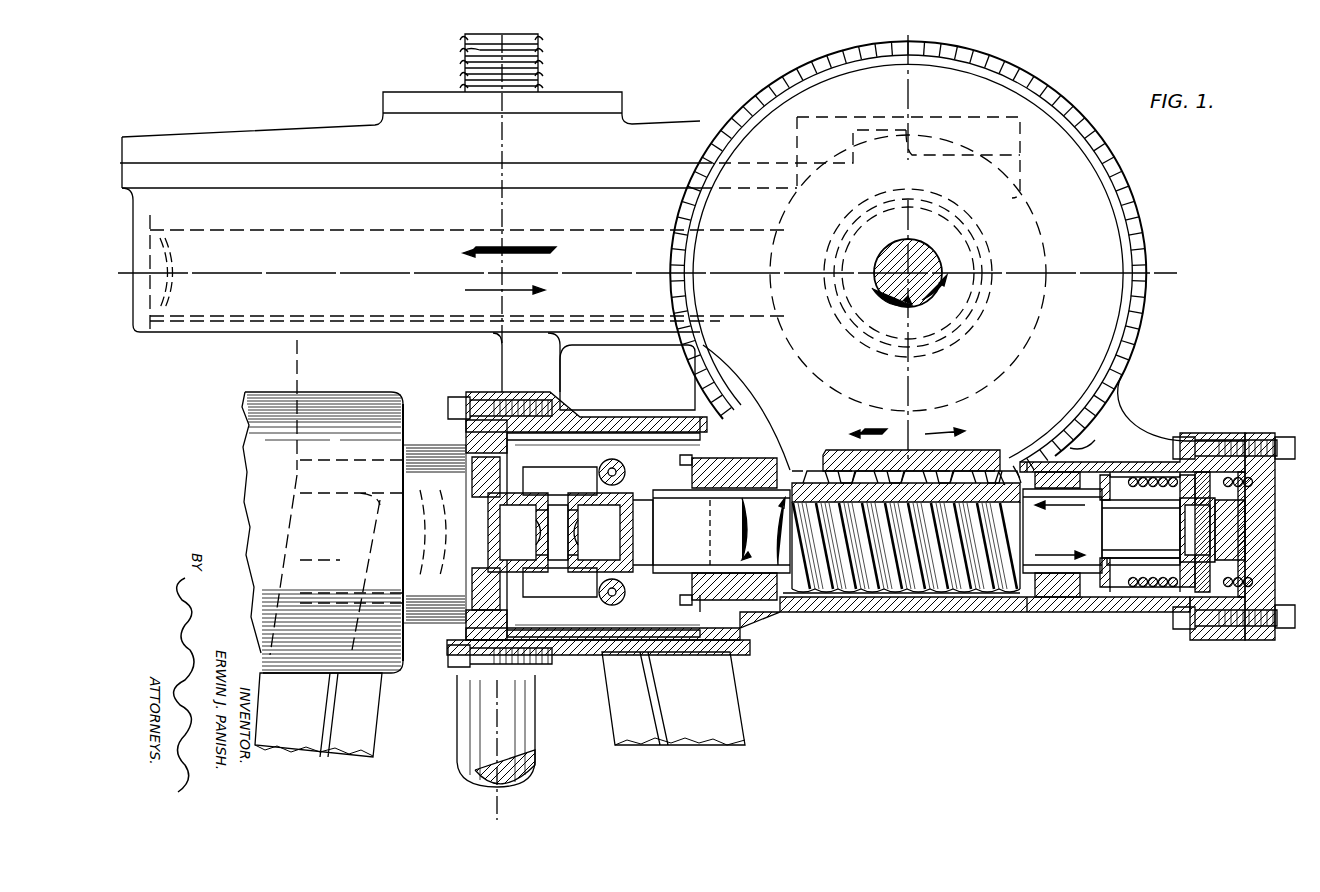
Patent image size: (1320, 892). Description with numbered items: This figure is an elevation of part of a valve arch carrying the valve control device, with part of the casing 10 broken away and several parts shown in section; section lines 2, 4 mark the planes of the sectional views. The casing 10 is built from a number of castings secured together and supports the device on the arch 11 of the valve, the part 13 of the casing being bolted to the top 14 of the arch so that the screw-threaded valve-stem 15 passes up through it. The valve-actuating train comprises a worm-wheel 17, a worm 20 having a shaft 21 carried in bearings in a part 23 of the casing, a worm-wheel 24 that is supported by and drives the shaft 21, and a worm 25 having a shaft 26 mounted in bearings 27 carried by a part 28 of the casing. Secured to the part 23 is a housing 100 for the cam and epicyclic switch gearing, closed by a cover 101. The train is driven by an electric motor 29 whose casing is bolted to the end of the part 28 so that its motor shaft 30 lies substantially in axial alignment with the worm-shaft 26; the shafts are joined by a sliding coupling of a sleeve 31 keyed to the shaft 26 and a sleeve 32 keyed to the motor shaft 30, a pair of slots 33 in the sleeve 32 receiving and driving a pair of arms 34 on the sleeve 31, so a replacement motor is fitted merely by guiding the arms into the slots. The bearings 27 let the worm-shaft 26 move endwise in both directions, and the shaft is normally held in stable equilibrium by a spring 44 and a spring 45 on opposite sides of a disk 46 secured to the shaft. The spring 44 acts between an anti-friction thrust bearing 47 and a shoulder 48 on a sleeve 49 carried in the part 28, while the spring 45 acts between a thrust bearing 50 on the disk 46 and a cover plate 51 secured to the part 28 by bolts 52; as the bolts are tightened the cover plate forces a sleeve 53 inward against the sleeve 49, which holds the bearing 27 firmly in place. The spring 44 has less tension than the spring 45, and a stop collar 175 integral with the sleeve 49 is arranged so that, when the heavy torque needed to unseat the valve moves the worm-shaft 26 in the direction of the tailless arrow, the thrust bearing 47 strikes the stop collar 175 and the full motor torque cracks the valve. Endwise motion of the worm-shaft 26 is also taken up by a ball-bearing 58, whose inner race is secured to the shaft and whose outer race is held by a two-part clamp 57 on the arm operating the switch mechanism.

The casing 10 is at (305, 200).
The arch 11 is at (500, 704).
The part of the casing 13 is at (315, 345).
The top of the arch 14 is at (320, 475).
The valve-stem 15 is at (468, 55).
The worm-wheel 17 is at (604, 242).
The section line 2 is at (1177, 270).
The section line 4 is at (1063, 270).
The worm 20 is at (920, 352).
The shaft 21 is at (903, 262).
The part of the casing 23 is at (975, 318).
The worm-wheel 24 is at (845, 452).
The worm 25 is at (862, 592).
The worm-shaft 26 is at (877, 531).
The bearings 27 is at (775, 605).
The part of the casing 28 is at (600, 657).
The electric motor 29 is at (250, 410).
The motor shaft 30 is at (570, 532).
The sleeve 31 is at (612, 532).
The sleeve 32 is at (486, 533).
The slots 33 is at (527, 468).
The arms 34 is at (560, 532).
The spring 44 is at (1140, 478).
The spring 45 is at (1228, 500).
The disk 46 is at (1152, 530).
The anti-friction thrust bearing 47 is at (1185, 478).
The shoulder 48 is at (1141, 529).
The sleeve 49 is at (1104, 475).
The anti-friction thrust bearing 50 is at (1200, 470).
The cover plate 51 is at (1275, 440).
The bolts 52 is at (1243, 470).
The sleeve 53 is at (1170, 615).
The two-part clamp 57 is at (635, 585).
The ball-bearing 58 is at (648, 575).
The housing 100 is at (1018, 166).
The cover 101 is at (948, 117).
The stop collar 175 is at (1165, 478).